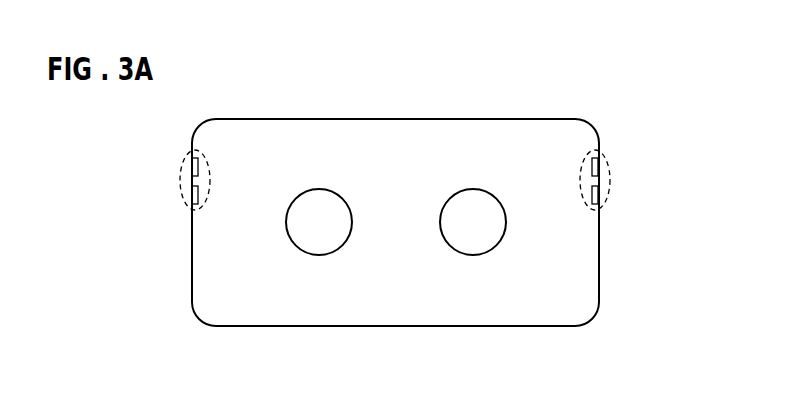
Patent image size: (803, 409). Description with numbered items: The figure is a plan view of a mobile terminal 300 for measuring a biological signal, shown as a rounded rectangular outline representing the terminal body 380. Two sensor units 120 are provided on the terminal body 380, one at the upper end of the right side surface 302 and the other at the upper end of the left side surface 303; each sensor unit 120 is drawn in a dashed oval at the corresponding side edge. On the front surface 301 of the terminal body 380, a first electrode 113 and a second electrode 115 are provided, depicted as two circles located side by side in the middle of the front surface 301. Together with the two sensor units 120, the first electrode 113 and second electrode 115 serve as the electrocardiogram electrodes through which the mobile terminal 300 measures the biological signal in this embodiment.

The mobile terminal 300 is at (393, 204).
The front surface 301 is at (320, 127).
The right side surface 302 is at (599, 268).
The left side surface 303 is at (192, 273).
The terminal body 380 is at (455, 119).
The first electrode 113 is at (318, 255).
The second electrode 115 is at (473, 255).
The sensor unit 120 is at (180, 185).